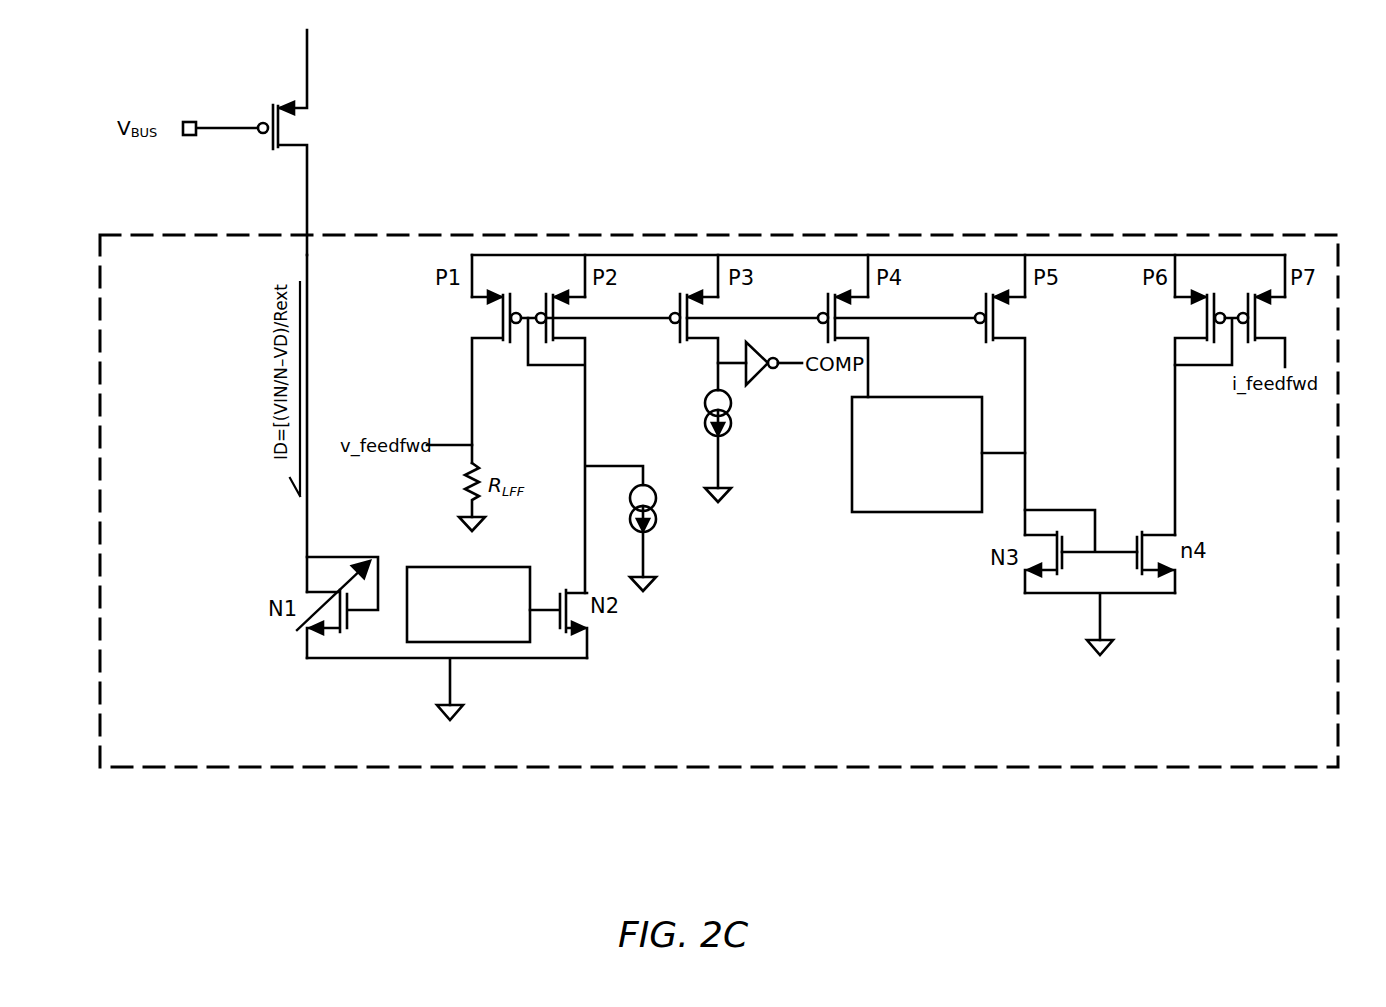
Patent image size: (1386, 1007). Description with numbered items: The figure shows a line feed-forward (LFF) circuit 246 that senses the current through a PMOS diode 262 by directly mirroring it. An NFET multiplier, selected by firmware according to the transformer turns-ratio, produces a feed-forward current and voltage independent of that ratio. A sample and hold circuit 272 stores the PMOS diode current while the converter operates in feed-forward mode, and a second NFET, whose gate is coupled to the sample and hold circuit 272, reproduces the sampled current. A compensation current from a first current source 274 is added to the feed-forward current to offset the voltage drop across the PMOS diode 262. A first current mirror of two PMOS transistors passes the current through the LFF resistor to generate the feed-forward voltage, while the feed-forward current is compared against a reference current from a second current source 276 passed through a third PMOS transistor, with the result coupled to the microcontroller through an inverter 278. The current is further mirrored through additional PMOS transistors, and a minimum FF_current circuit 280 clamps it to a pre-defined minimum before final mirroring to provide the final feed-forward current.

The PMOS diode 262 is at (300, 123).
The sample and hold circuit 272 is at (485, 628).
The first current source 274 is at (657, 519).
The second current source 276 is at (733, 423).
The inverter 278 is at (764, 357).
The minimum FF_current circuit 280 is at (916, 397).
The LFF circuit 246 is at (737, 736).